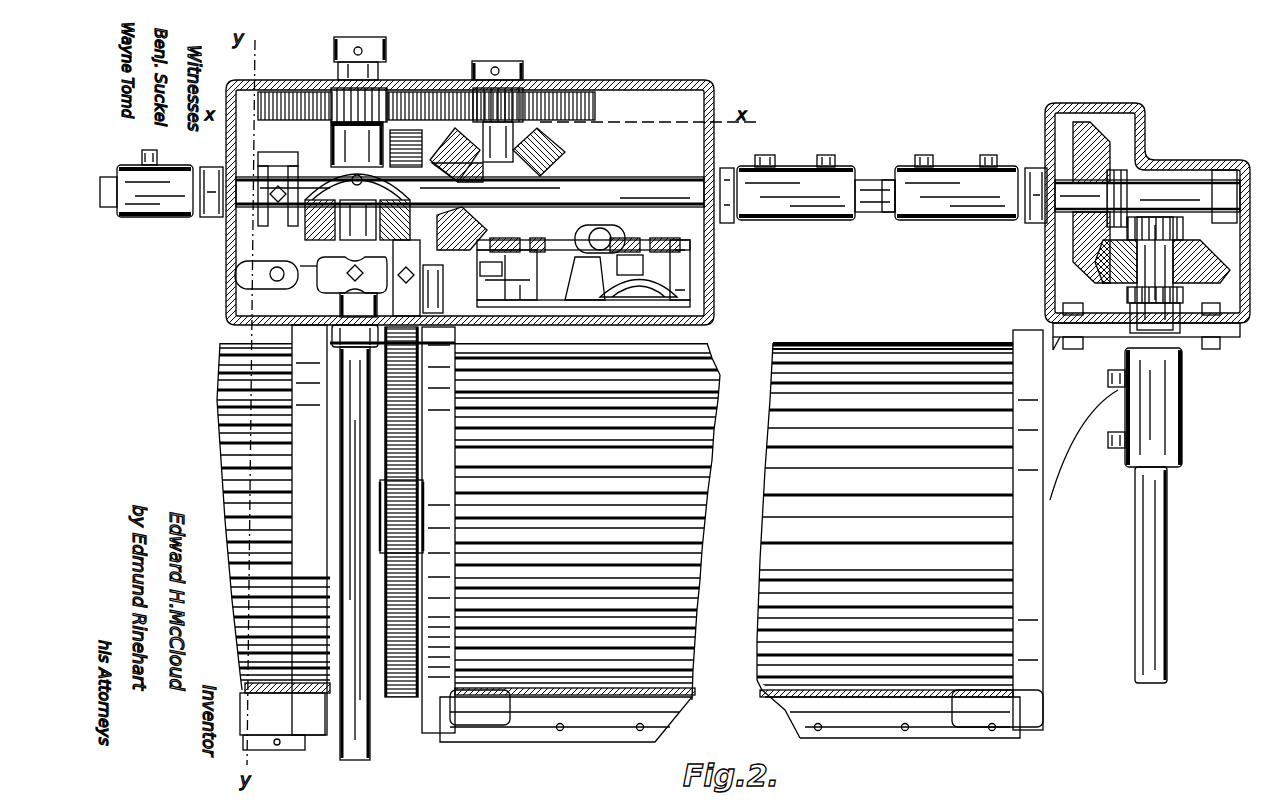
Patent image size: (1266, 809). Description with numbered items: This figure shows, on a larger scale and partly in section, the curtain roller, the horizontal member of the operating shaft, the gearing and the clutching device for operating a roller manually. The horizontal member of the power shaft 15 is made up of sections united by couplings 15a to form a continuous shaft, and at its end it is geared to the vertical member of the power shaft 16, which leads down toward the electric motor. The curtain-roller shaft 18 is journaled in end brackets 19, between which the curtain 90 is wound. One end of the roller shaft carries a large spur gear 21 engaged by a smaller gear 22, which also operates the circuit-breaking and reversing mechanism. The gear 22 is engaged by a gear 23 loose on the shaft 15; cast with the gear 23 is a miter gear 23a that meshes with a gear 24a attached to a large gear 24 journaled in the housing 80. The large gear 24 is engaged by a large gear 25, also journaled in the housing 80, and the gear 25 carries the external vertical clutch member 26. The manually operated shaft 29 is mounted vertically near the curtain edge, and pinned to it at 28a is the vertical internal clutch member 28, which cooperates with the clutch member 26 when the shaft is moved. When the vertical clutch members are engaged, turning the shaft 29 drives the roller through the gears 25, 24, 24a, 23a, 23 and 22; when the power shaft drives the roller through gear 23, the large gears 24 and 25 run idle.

The horizontal member of the power shaft 15 is at (653, 190).
The couplings 15a is at (973, 152).
The vertical member of the power shaft 16 is at (1158, 590).
The curtain-roller shaft 18 is at (376, 560).
The end brackets 19 is at (448, 503).
The large spur gear 21 is at (381, 555).
The gear 22 is at (467, 262).
The gear 23 is at (401, 136).
The miter gear 23a is at (485, 125).
The large gear 24 is at (594, 105).
The gear 24a is at (552, 148).
The large gear 25 is at (277, 95).
The external vertical clutch member 26 is at (290, 235).
The vertical internal clutch member 28 is at (323, 240).
The pin 28a is at (318, 258).
The manually operated shaft 29 is at (355, 437).
The housing 80 is at (712, 105).
The curtain 90 is at (878, 352).